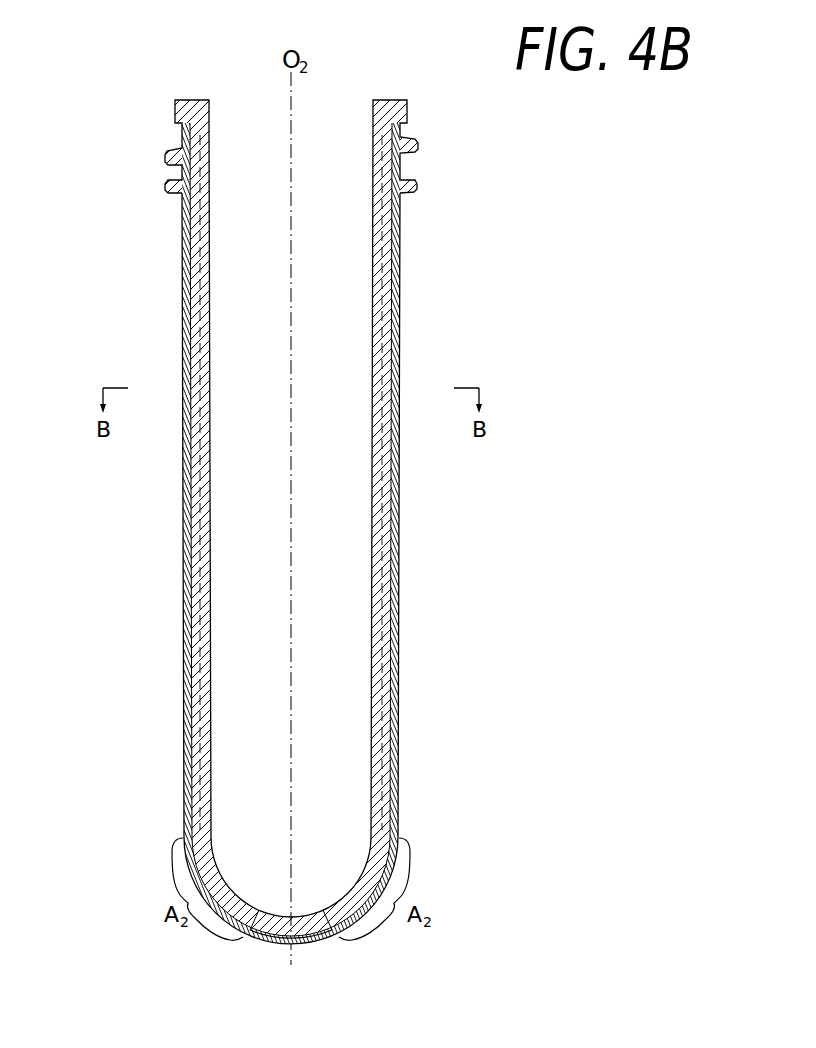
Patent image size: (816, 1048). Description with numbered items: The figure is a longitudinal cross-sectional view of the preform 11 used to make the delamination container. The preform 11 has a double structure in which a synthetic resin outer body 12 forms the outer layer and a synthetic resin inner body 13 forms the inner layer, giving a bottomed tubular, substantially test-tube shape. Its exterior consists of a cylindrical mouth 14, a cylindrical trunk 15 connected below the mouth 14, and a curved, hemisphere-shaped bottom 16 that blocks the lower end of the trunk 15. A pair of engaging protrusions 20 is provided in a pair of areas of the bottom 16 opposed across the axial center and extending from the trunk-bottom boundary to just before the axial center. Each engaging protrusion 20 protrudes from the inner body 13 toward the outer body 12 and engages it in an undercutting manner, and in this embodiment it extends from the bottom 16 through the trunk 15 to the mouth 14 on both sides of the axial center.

The preform 11 is at (470, 244).
The outer body 12 is at (400, 328).
The inner body 13 is at (372, 493).
The mouth 14 is at (405, 163).
The trunk 15 is at (405, 529).
The bottom 16 is at (303, 945).
The engaging protrusion 20 is at (392, 610).